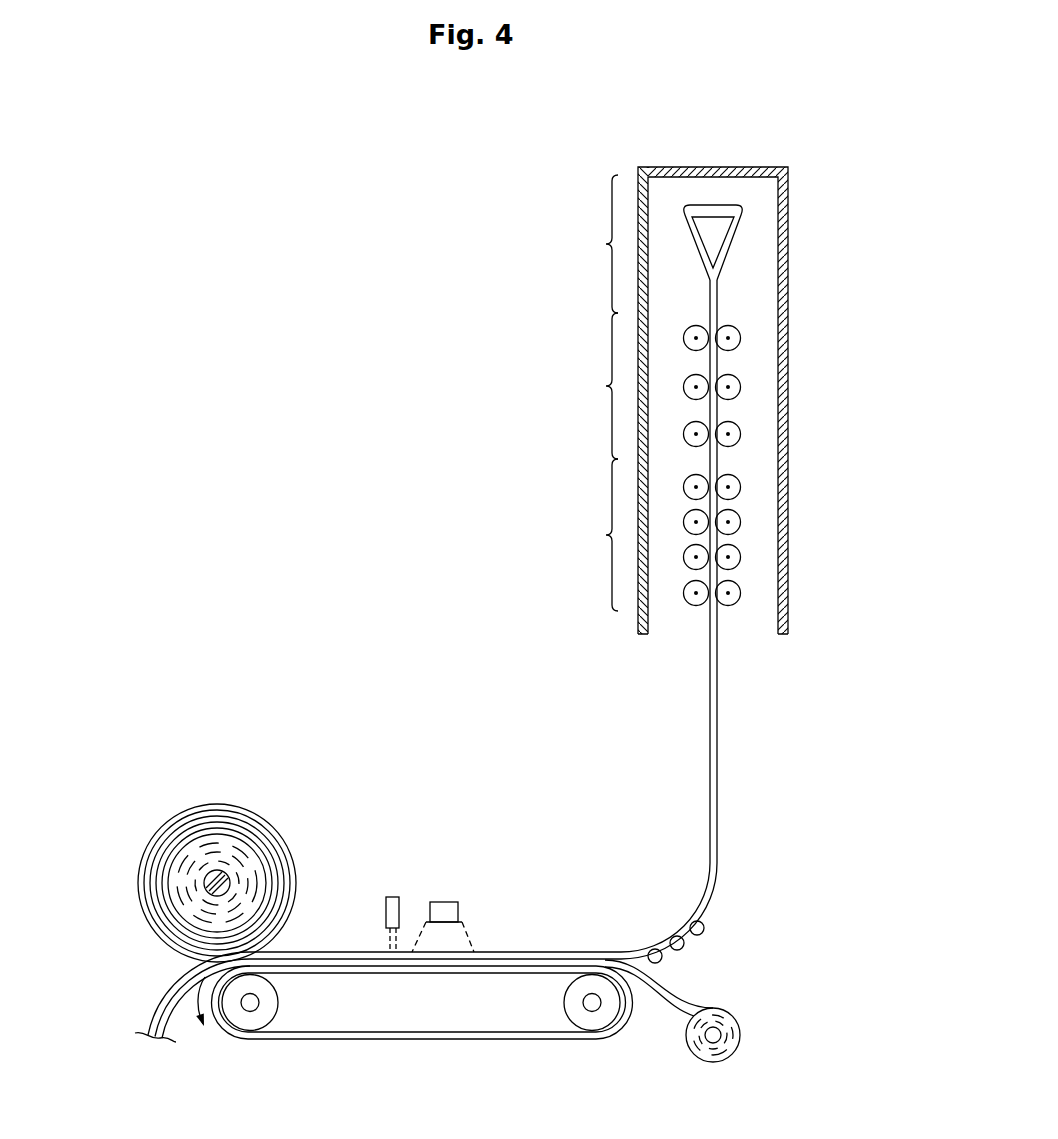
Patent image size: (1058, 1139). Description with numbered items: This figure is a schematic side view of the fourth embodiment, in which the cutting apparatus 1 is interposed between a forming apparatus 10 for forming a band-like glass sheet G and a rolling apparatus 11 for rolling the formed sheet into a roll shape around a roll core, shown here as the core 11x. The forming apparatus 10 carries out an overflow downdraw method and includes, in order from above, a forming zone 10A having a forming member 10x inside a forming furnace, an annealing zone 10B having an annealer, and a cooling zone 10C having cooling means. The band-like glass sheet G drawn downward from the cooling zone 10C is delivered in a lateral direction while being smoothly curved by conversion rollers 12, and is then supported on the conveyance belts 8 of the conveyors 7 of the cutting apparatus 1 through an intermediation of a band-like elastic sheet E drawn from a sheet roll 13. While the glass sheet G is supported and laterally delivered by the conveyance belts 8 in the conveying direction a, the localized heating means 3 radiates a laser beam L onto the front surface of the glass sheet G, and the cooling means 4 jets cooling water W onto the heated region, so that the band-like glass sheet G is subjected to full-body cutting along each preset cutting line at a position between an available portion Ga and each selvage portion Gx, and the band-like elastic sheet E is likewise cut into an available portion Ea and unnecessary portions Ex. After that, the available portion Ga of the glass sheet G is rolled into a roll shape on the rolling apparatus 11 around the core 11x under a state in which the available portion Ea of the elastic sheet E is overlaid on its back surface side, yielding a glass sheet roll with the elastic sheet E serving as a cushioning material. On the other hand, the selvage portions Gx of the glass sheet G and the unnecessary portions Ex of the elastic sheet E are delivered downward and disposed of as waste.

The cutting apparatus 1 is at (520, 870).
The localized heating means 3 is at (464, 890).
The cooling means 4 is at (379, 890).
The conveyor 7 is at (360, 1005).
The conveyance belt 8 is at (442, 973).
The forming apparatus 10 is at (716, 387).
The forming zone 10A is at (589, 244).
The annealing zone 10B is at (589, 386).
The cooling zone 10C is at (589, 535).
The forming member 10x is at (715, 240).
The rolling apparatus 11 is at (181, 852).
The winding core 11x is at (206, 880).
The conversion rollers 12 is at (660, 962).
The sheet roll 13 is at (737, 1041).
The band-like glass sheet G is at (711, 768).
The band-like elastic sheet E is at (661, 982).
The available portion Ga is at (167, 933).
The available portion Ea is at (175, 953).
The selvage portion Gx is at (157, 1004).
The unnecessary portion Ex is at (178, 1008).
The conveying direction a is at (205, 1012).
The cooling water W is at (390, 935).
The laser beam L is at (468, 937).